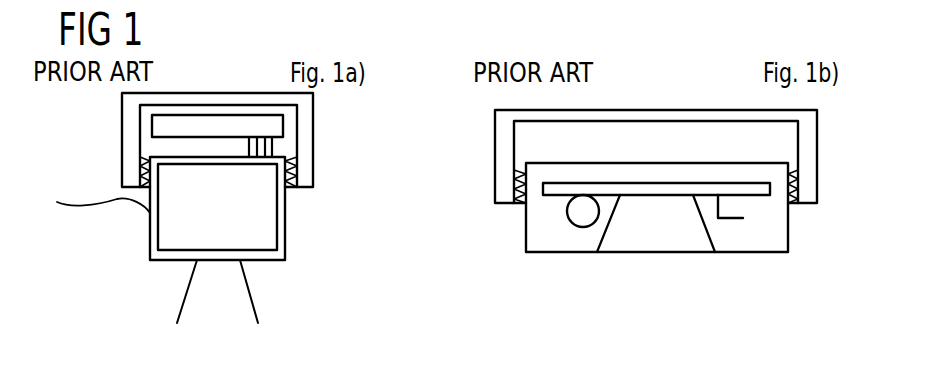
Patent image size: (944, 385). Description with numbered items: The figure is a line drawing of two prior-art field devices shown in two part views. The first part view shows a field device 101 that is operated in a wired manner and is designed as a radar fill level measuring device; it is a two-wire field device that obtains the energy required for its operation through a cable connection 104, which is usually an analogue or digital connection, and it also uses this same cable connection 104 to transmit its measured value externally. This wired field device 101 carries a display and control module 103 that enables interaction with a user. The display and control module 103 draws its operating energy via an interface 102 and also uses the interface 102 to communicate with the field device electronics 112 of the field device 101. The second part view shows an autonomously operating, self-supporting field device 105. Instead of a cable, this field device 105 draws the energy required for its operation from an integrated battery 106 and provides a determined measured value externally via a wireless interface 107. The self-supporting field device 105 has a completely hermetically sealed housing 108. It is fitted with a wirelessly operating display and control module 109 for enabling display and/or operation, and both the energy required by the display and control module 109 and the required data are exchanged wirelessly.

In FIG. 1A, the field device 101 is at (287, 215).
In FIG. 1A, the interface 102 is at (256, 157).
In FIG. 1A, the display and control module 103 is at (217, 126).
In FIG. 1A, the cable connection 104 is at (73, 205).
In FIG. 1A, the field device electronics 112 is at (268, 237).
In FIG. 1B, the field device 105 is at (788, 237).
In FIG. 1B, the battery 106 is at (583, 227).
In FIG. 1B, the wireless interface 107 is at (730, 222).
In FIG. 1B, the housing 108 is at (525, 225).
In FIG. 1B, the display and control module 109 is at (657, 133).